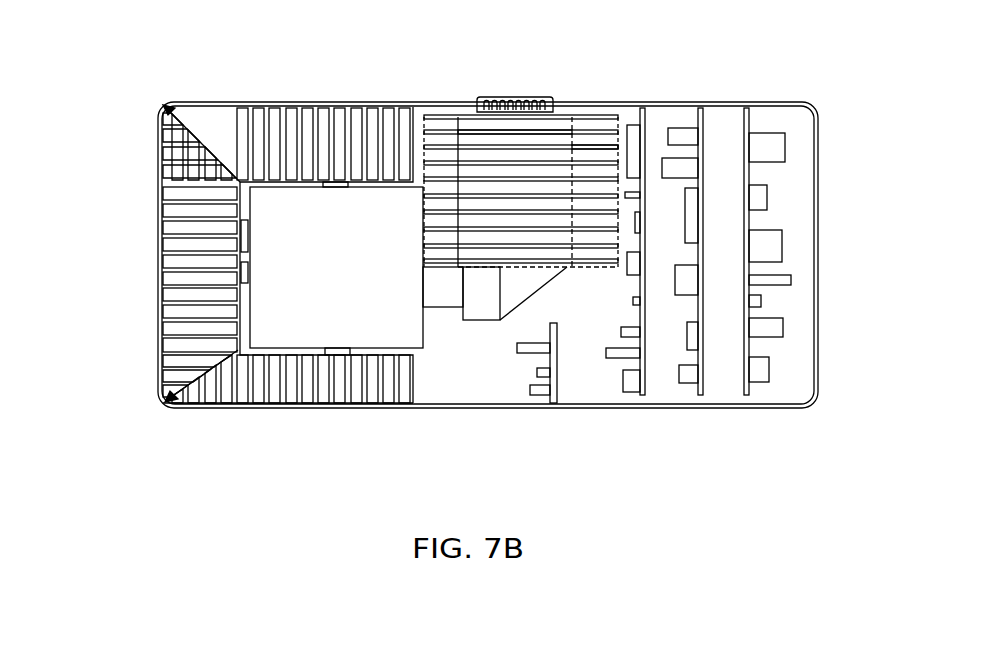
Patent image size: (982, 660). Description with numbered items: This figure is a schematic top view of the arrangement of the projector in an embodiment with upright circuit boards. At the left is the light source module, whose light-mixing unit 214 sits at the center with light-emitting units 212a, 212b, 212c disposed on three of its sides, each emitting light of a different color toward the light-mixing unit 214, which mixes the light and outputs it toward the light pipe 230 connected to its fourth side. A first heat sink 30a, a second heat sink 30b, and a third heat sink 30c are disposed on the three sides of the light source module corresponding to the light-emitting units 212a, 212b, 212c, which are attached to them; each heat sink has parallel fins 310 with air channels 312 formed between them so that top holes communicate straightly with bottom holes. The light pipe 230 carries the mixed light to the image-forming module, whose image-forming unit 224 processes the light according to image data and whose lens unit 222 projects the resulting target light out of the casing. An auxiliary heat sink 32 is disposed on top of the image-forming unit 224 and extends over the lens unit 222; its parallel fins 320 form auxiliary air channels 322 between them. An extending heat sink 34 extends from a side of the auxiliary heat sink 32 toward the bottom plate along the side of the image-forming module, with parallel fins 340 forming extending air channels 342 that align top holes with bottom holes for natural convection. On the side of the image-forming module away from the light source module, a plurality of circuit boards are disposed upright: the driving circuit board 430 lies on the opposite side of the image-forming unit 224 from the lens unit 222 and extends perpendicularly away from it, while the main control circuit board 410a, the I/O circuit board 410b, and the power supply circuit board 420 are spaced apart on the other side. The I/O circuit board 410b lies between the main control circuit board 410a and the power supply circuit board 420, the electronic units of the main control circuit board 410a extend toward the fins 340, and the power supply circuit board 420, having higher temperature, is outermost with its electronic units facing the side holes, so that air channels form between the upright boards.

The light-emitting unit 212a is at (327, 353).
The light-emitting unit 212b is at (245, 262).
The light-emitting unit 212c is at (313, 126).
The light-mixing unit 214 is at (266, 318).
The lens unit 222 is at (552, 99).
The image-forming unit 224 is at (492, 283).
The light pipe 230 is at (435, 287).
The first heat sink 30a is at (366, 357).
The second heat sink 30b is at (238, 237).
The third heat sink 30c is at (341, 176).
The fins 310 is at (277, 153).
The air channels 312 is at (322, 176).
The auxiliary heat sink 32 is at (460, 116).
The fins 320 is at (472, 150).
The auxiliary air channels 322 is at (501, 134).
The extending heat sink 34 is at (605, 147).
The fins 340 is at (607, 127).
The extending air channels 342 is at (583, 134).
The main control circuit board 410a is at (643, 396).
The I/O circuit board 410b is at (700, 396).
The power supply circuit board 420 is at (747, 396).
The driving circuit board 430 is at (556, 403).